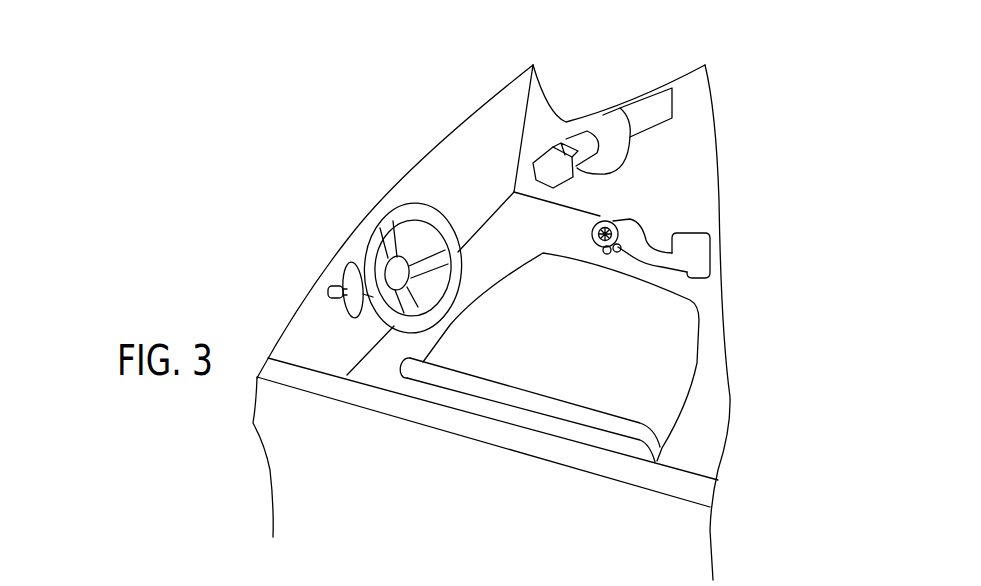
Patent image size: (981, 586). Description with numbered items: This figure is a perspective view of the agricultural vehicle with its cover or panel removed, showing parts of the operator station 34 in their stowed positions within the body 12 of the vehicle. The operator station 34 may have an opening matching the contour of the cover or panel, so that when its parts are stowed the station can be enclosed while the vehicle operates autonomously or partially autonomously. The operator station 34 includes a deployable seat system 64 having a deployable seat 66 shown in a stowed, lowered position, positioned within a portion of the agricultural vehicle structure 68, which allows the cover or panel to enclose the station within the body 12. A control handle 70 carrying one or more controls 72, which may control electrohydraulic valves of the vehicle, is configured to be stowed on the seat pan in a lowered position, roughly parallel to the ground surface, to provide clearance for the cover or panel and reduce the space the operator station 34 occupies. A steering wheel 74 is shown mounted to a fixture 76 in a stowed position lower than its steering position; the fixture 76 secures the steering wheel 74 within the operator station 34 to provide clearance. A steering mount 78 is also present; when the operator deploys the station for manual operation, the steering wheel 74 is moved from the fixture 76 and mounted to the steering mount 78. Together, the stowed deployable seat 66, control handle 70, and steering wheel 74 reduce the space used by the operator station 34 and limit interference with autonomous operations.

The body 12 is at (733, 118).
The operator station 34 is at (337, 180).
The deployable seat system 64 is at (695, 445).
The deployable seat 66 is at (685, 398).
The agricultural vehicle structure 68 is at (677, 480).
The control handle 70 is at (657, 227).
The controls 72 is at (614, 223).
The steering wheel 74 is at (368, 231).
The fixture 76 is at (343, 305).
The steering mount 78 is at (562, 142).